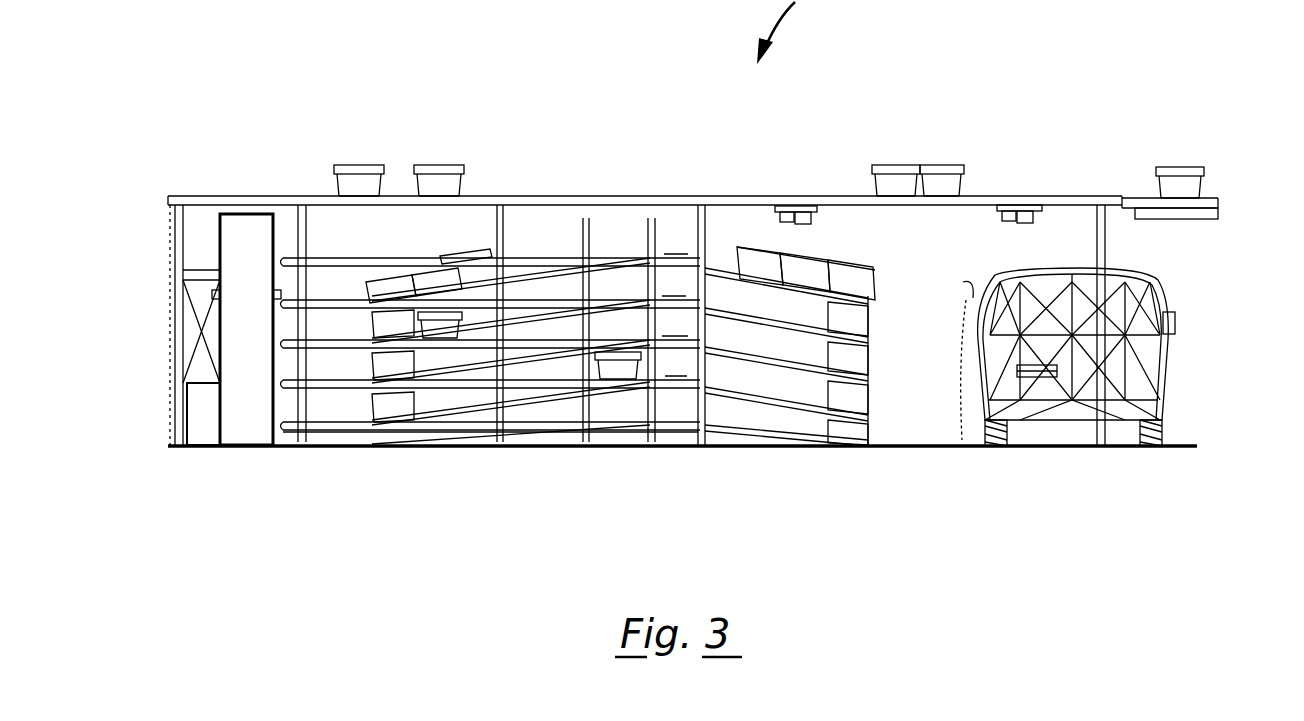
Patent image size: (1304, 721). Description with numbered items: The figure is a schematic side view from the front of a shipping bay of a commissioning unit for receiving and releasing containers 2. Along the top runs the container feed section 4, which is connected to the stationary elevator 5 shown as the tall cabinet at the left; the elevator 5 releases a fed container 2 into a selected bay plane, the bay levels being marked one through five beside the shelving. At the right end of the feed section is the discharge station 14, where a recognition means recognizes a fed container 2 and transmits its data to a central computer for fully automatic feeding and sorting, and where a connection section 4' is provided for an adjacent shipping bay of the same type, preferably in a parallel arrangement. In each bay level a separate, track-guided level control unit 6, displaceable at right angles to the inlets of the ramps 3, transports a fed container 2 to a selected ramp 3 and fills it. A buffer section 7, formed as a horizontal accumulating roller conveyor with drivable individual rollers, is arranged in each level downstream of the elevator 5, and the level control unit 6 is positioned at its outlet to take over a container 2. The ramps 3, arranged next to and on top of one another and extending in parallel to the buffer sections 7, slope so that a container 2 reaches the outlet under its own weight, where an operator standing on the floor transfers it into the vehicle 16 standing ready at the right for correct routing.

The connection section 4' is at (651, 301).
The container feed section 4 is at (1198, 175).
The discharge station 14 is at (1195, 216).
The container 2 is at (443, 182).
The elevator 5 is at (237, 235).
The level control unit 6 is at (610, 257).
The buffer section 7 is at (332, 426).
The ramp 3 is at (776, 420).
The vehicle 16 is at (1165, 400).